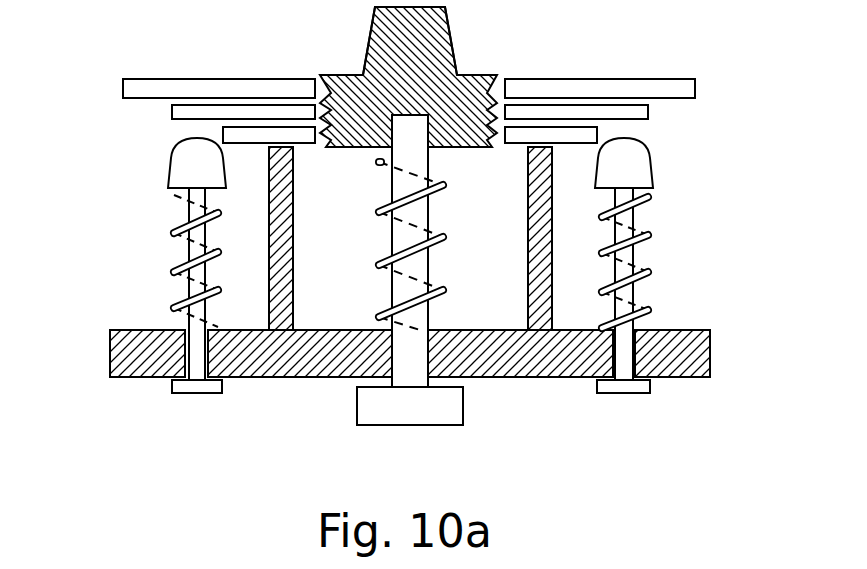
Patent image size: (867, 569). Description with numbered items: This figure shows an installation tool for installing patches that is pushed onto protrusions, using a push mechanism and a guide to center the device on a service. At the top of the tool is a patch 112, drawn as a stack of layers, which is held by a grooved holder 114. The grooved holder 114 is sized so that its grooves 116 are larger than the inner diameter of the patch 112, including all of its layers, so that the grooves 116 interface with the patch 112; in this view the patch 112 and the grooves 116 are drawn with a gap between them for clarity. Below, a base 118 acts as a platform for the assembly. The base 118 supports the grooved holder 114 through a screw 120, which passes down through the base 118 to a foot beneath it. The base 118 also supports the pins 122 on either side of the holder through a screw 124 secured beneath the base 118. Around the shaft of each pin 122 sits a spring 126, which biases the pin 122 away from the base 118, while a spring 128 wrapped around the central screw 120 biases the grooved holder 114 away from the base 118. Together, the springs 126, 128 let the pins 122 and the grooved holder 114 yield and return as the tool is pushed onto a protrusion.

The patch 112 is at (697, 72).
The grooved holder 114 is at (457, 65).
The grooves 116 is at (497, 85).
The base 118 is at (562, 378).
The screw 120 is at (408, 427).
The pins 122 is at (168, 164).
The screw 124 is at (181, 394).
The spring 126 is at (172, 268).
The spring 128 is at (375, 318).